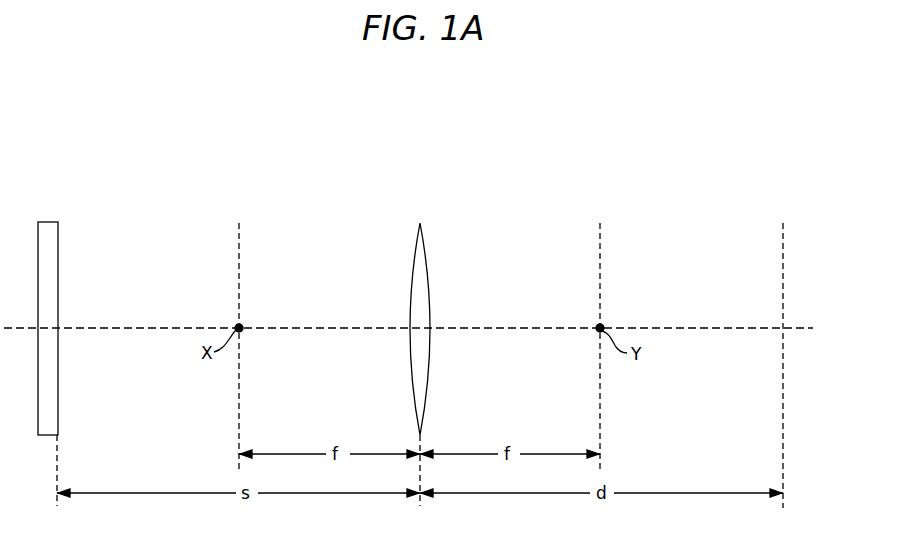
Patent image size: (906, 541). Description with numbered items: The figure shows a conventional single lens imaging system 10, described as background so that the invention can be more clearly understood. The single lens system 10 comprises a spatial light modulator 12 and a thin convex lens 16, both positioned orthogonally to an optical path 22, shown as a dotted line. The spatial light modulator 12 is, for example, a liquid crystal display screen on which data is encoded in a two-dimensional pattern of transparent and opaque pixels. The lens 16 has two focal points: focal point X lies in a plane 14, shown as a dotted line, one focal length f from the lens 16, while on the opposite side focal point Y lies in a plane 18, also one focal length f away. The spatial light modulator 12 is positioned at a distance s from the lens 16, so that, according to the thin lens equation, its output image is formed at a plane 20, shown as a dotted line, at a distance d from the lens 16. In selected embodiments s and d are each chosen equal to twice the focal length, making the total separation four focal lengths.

The single lens imaging system 10 is at (119, 108).
The spatial light modulator 12 is at (48, 222).
The plane 14 is at (239, 223).
The thin convex lens 16 is at (420, 223).
The plane 18 is at (600, 223).
The plane 20 is at (783, 223).
The optical path 22 is at (813, 328).